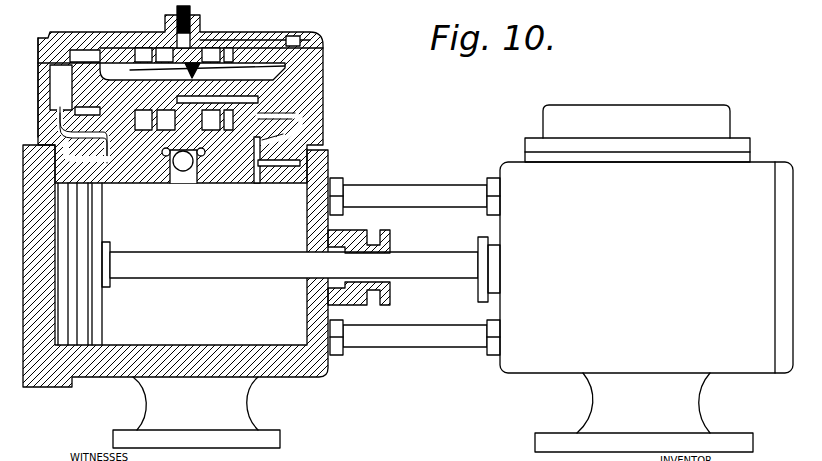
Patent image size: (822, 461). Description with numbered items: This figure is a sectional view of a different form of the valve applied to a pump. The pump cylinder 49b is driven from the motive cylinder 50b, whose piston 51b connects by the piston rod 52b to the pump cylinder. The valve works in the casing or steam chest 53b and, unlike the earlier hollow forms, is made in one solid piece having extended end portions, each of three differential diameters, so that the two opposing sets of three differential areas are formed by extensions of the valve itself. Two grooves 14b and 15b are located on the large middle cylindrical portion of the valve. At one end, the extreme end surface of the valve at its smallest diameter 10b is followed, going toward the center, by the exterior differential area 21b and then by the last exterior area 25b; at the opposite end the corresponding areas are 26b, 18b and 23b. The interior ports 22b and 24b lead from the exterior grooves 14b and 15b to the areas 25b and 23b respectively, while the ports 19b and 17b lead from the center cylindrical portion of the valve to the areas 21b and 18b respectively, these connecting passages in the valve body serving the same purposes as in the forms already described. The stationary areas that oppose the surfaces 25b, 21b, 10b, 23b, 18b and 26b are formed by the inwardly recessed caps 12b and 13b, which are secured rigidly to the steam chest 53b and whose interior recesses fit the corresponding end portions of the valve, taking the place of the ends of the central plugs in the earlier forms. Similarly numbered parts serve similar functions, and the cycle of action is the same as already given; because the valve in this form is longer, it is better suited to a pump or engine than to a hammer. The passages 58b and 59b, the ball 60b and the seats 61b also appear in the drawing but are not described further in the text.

The extreme end surface of the valve 10b is at (323, 72).
The inwardly recessed cap 12b is at (323, 50).
The inwardly recessed cap 13b is at (50, 60).
The groove 14b is at (186, 39).
The groove 15b is at (222, 60).
The port 17b is at (50, 77).
The differential area 18b is at (80, 52).
The port 19b is at (259, 62).
The exterior differential area 21b is at (258, 100).
The interior port 22b is at (250, 135).
The differential area 23b is at (128, 63).
The interior port 24b is at (153, 62).
The exterior differential area 25b is at (302, 117).
The differential area 26b is at (50, 103).
The pump cylinder 49b is at (646, 278).
The motive cylinder 50b is at (287, 378).
The piston 51b is at (100, 316).
The piston rod 52b is at (305, 269).
The casing or steam chest 53b is at (293, 36).
The passage 58b is at (45, 143).
The passage 59b is at (300, 173).
The ball valve 60b is at (183, 172).
The ball seat 61b is at (166, 157).